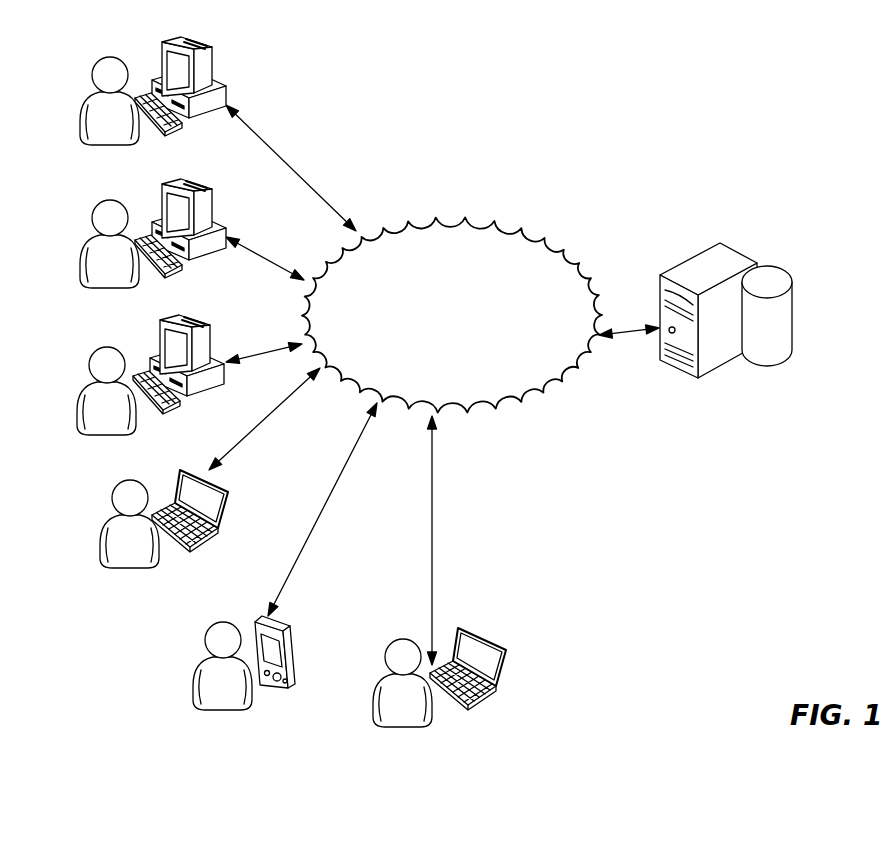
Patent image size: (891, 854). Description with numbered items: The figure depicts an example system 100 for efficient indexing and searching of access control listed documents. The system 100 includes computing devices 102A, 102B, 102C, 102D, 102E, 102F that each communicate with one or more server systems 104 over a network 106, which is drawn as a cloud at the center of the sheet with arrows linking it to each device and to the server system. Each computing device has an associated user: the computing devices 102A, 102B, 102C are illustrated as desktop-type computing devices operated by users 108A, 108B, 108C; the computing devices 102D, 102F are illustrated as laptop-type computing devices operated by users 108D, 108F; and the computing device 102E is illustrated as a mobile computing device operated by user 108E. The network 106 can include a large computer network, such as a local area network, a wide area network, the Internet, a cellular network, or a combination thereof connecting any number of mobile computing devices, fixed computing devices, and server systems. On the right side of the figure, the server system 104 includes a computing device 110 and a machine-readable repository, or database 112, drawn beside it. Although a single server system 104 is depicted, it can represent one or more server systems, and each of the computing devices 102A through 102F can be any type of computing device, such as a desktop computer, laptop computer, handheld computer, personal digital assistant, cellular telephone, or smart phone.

The system 100 is at (608, 55).
The computing device 102A is at (213, 52).
The computing device 102B is at (213, 196).
The computing device 102C is at (211, 334).
The computing device 102D is at (229, 493).
The computing device 102E is at (292, 634).
The computing device 102F is at (507, 651).
The server system 104 is at (745, 333).
The network 106 is at (430, 218).
The user 108A is at (101, 146).
The user 108B is at (100, 288).
The user 108C is at (97, 435).
The user 108D is at (120, 568).
The user 108E is at (213, 710).
The user 108F is at (393, 727).
The computing device 110 is at (745, 254).
The database 112 is at (797, 280).